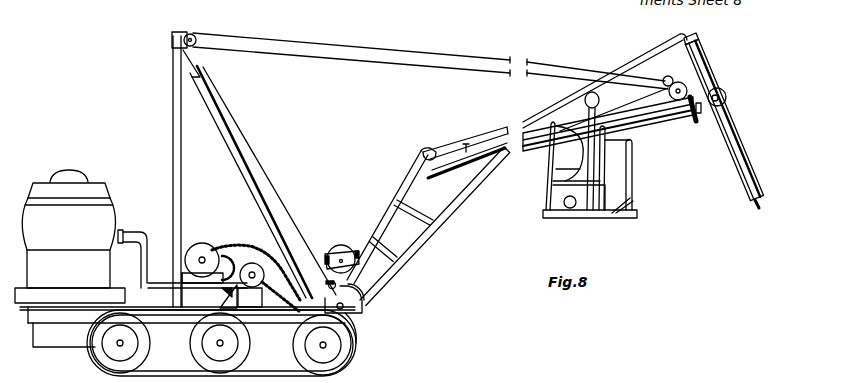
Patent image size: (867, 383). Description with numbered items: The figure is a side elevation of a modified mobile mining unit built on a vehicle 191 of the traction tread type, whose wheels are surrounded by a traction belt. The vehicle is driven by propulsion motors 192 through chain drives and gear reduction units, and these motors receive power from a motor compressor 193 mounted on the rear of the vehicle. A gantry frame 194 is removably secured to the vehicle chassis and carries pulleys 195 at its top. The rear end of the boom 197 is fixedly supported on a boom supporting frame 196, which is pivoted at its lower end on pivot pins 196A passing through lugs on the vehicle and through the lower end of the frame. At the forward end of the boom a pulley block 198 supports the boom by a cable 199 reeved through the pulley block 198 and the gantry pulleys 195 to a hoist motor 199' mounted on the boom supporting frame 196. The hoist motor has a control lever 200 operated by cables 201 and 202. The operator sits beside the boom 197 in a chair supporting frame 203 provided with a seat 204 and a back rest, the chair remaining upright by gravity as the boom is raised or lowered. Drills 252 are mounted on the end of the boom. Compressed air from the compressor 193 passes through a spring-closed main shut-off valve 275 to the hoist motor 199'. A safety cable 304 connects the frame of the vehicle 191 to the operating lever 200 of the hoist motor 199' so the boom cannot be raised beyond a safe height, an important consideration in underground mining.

The vehicle 191 is at (362, 337).
The propulsion motors 192 is at (216, 246).
The motor compressor 193 is at (110, 223).
The gantry frame 194 is at (240, 128).
The pulleys 195 is at (172, 34).
The boom supporting frame 196 is at (425, 240).
The pivot pins 196A is at (350, 342).
The boom 197 is at (655, 124).
The pulley block 198 is at (672, 77).
The cable 199 is at (430, 65).
The hoist motor 199' is at (334, 236).
The control lever 200 is at (343, 262).
The cable 201 is at (400, 200).
The cable 202 is at (370, 237).
The chair supporting frame 203 is at (643, 205).
The seat 204 is at (570, 180).
The drills 252 is at (733, 116).
The main shut-off valve 275 is at (353, 290).
The safety cable 304 is at (366, 306).